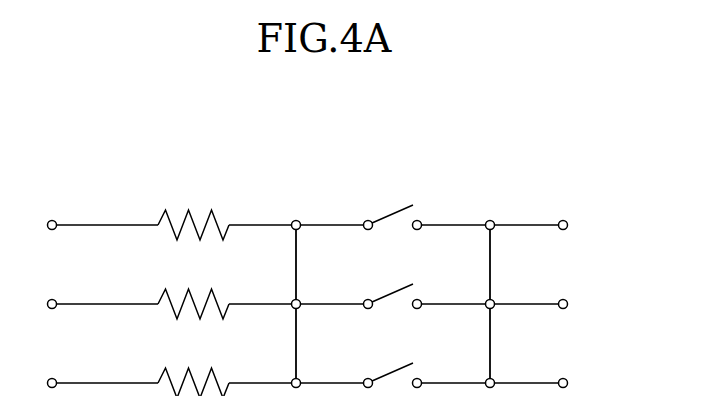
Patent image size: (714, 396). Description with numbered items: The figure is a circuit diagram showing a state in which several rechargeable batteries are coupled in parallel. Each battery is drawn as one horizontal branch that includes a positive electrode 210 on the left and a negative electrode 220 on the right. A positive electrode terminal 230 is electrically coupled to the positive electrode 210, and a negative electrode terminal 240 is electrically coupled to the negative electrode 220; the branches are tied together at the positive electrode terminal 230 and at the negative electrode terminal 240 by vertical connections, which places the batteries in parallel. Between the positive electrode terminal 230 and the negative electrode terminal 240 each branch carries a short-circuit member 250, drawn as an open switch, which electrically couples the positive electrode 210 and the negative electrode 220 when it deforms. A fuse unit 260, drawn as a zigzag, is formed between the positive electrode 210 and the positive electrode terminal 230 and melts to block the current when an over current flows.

The positive electrode 210 is at (54, 221).
The negative electrode 220 is at (567, 221).
The positive electrode terminal 230 is at (298, 221).
The negative electrode terminal 240 is at (494, 221).
The short-circuit member 250 is at (393, 213).
The fuse unit 260 is at (173, 217).